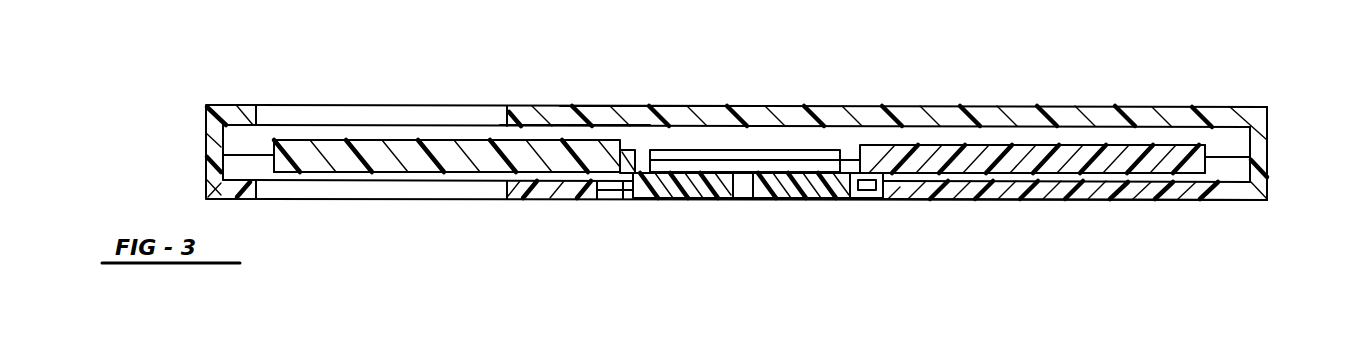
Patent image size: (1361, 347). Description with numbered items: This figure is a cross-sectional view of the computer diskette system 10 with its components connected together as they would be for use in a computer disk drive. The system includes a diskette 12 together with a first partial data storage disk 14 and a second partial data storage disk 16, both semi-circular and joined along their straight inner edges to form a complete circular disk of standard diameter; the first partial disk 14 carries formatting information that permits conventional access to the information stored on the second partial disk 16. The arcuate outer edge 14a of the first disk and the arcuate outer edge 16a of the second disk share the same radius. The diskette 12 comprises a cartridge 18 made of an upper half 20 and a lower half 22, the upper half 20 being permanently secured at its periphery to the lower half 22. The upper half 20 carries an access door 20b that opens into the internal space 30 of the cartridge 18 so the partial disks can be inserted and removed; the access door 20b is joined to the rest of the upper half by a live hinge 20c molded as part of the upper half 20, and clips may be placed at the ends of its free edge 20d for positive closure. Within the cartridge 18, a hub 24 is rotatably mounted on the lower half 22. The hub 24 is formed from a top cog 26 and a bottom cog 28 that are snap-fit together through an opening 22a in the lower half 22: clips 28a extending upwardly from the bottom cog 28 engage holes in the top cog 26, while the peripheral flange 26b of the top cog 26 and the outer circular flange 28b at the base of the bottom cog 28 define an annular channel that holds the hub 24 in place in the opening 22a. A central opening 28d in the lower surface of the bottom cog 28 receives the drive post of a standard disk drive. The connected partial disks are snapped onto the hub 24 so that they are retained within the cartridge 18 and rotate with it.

The computer diskette system 10 is at (180, 64).
The diskette 12 is at (195, 127).
The first partial data storage disk 14 is at (410, 137).
The arcuate outer edge 14a is at (272, 140).
The second partial data storage disk 16 is at (1075, 133).
The arcuate outer edge 16a is at (1207, 146).
The cartridge 18 is at (1256, 104).
The upper half 20 is at (992, 105).
The access door 20b is at (1130, 107).
The hinge 20c is at (662, 106).
The free edge 20d is at (1267, 133).
The lower half 22 is at (1200, 205).
The opening 22a is at (638, 200).
The hub 24 is at (713, 204).
The top cog 26 is at (781, 148).
The peripheral flange 26b is at (898, 200).
The bottom cog 28 is at (809, 206).
The clips 28a is at (826, 156).
The outer circular flange 28b is at (600, 200).
The opening 28d is at (747, 0).
The internal space 30 is at (571, 137).